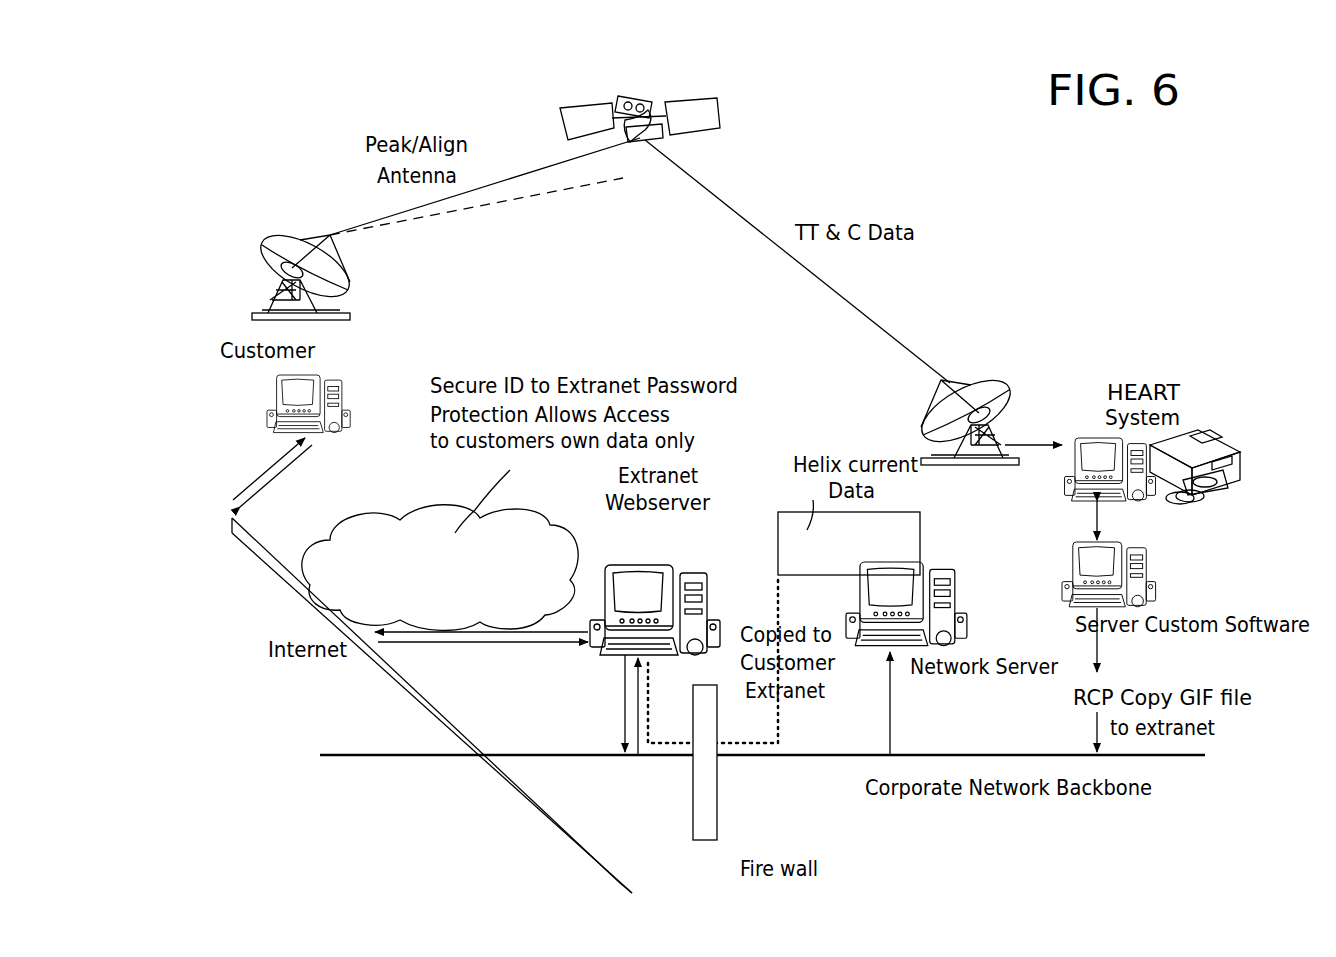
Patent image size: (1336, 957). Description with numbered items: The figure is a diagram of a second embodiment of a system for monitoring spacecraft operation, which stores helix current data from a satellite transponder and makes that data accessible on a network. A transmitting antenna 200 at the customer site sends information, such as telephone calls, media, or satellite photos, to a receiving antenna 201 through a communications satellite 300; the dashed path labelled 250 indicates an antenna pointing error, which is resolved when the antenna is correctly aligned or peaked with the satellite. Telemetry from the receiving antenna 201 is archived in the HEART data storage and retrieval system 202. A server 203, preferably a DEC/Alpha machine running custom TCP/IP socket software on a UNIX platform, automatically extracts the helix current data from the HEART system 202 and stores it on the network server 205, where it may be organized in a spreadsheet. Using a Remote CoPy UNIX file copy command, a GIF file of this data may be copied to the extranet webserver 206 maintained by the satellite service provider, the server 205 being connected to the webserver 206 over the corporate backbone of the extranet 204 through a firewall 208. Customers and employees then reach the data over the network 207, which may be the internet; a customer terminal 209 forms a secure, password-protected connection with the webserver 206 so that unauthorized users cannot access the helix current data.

The transmitting antenna 200 is at (267, 265).
The receiving antenna 201 is at (1010, 383).
The HEART data storage and retrieval system 202 is at (1200, 440).
The server 203 is at (1147, 572).
The extranet 204 is at (1205, 755).
The server 205 is at (957, 585).
The extranet webserver 206 is at (668, 567).
The network 207 is at (500, 777).
The firewall 208 is at (708, 792).
The customer terminal 209 is at (278, 400).
The antenna pointing error 250 is at (562, 190).
The communications satellite 300 is at (642, 97).